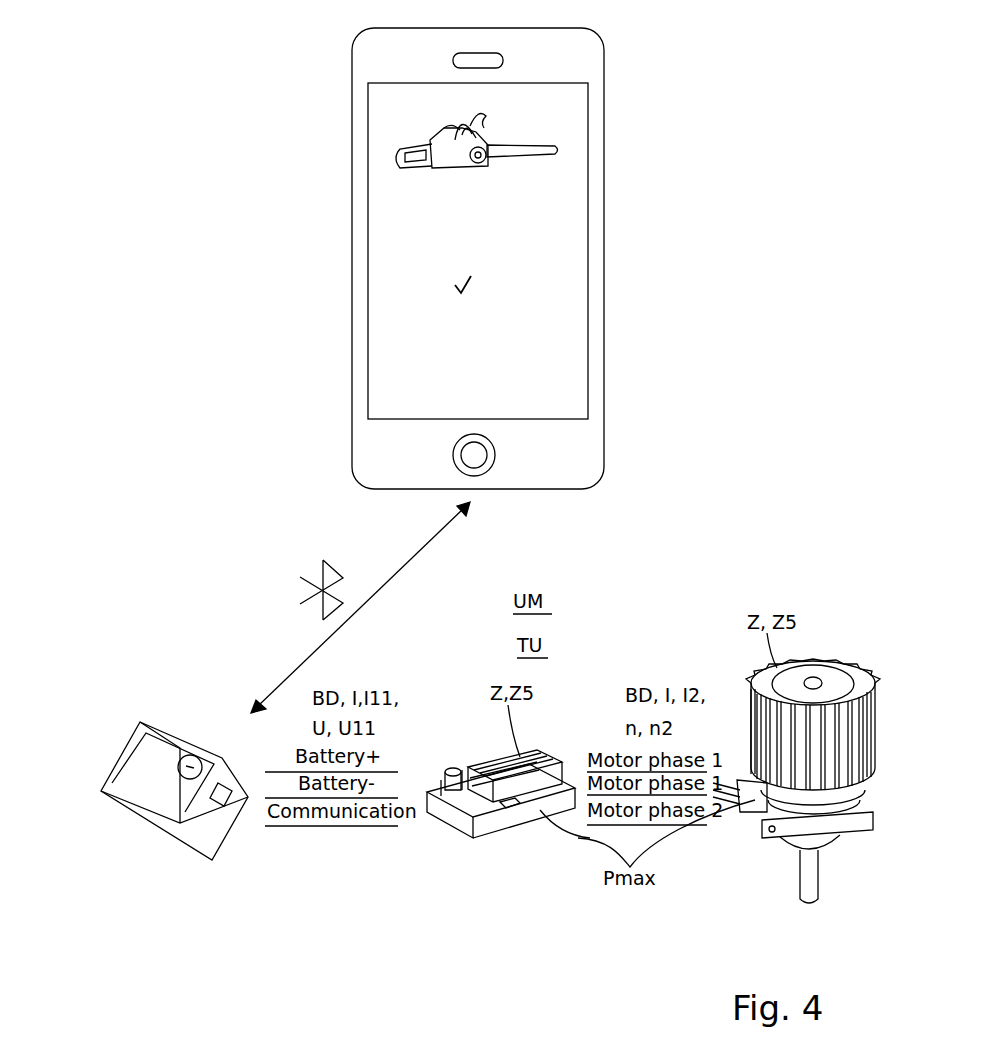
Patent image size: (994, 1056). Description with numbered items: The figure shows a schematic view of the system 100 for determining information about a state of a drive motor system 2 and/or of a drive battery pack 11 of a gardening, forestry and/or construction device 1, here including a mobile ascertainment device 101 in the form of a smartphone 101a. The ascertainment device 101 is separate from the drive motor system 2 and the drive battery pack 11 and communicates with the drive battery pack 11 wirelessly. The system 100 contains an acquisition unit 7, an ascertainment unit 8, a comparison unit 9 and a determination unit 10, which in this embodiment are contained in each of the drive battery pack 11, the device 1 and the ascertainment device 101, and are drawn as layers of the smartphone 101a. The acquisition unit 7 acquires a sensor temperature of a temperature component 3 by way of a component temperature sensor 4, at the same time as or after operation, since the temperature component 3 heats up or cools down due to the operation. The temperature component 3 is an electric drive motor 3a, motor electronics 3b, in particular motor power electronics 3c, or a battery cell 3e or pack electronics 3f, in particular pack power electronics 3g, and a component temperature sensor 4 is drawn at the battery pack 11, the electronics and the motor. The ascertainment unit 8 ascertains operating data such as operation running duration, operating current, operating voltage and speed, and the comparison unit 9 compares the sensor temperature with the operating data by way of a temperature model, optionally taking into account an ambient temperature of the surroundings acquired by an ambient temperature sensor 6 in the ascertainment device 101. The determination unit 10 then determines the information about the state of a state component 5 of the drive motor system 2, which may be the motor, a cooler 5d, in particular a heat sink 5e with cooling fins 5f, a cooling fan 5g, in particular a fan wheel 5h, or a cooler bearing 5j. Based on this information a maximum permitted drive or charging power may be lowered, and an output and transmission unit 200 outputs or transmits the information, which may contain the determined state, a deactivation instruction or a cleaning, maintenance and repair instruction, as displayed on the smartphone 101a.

The system 100 is at (311, 102).
The mobile ascertainment device 101 is at (568, 251).
The smartphone 101a is at (588, 91).
The determination unit 10 is at (588, 123).
The comparison unit 9 is at (588, 165).
The ascertainment unit 8 is at (588, 204).
The acquisition unit 7 is at (588, 247).
The ambient temperature sensor 6 is at (588, 315).
The output and transmission unit 200 is at (588, 390).
The gardening, forestry and/or construction device 1 is at (113, 880).
The drive battery pack 11 is at (160, 752).
The drive motor system 2 is at (872, 925).
The temperature component 3 is at (504, 829).
The electric drive motor 3a is at (757, 803).
The motor electronics 3b is at (504, 829).
The motor power electronics 3c is at (515, 817).
The battery cell 3e is at (318, 835).
The pack electronics 3f is at (318, 835).
The pack power electronics 3g is at (238, 808).
The component temperature sensor 4 is at (190, 847).
The state component 5 is at (710, 741).
The cooler 5d is at (611, 704).
The heat sink 5e is at (611, 704).
The cooling fins 5f is at (540, 753).
The cooling fan 5g is at (710, 741).
The fan wheel 5h is at (710, 741).
The cooler bearing 5j is at (835, 677).